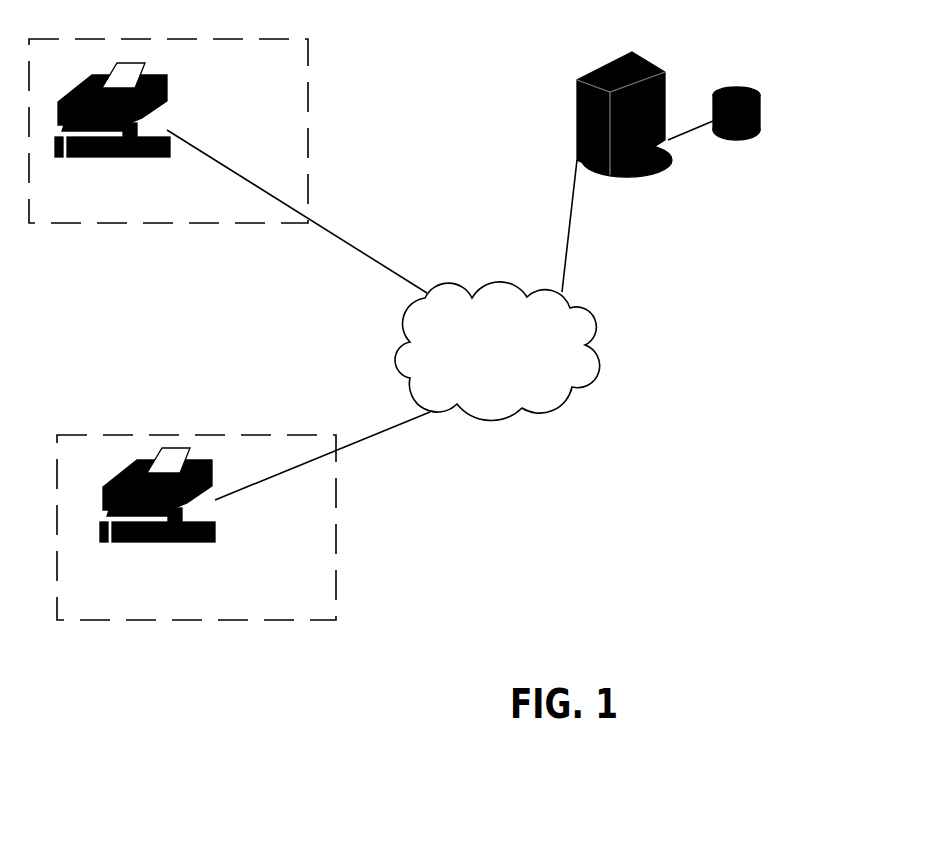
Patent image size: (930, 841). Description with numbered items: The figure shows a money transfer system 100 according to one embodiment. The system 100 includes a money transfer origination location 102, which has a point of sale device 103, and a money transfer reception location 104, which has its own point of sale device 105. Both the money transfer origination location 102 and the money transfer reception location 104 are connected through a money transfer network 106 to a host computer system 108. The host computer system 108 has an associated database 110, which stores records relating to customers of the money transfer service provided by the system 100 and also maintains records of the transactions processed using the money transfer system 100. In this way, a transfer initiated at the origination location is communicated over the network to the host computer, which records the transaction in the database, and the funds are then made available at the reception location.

The money transfer system 100 is at (447, 165).
The money transfer origination location 102 is at (286, 91).
The point of sale device 103 is at (170, 155).
The money transfer reception location 104 is at (301, 578).
The point of sale device 105 is at (180, 542).
The money transfer network 106 is at (474, 392).
The host computer system 108 is at (645, 173).
The database 110 is at (747, 140).